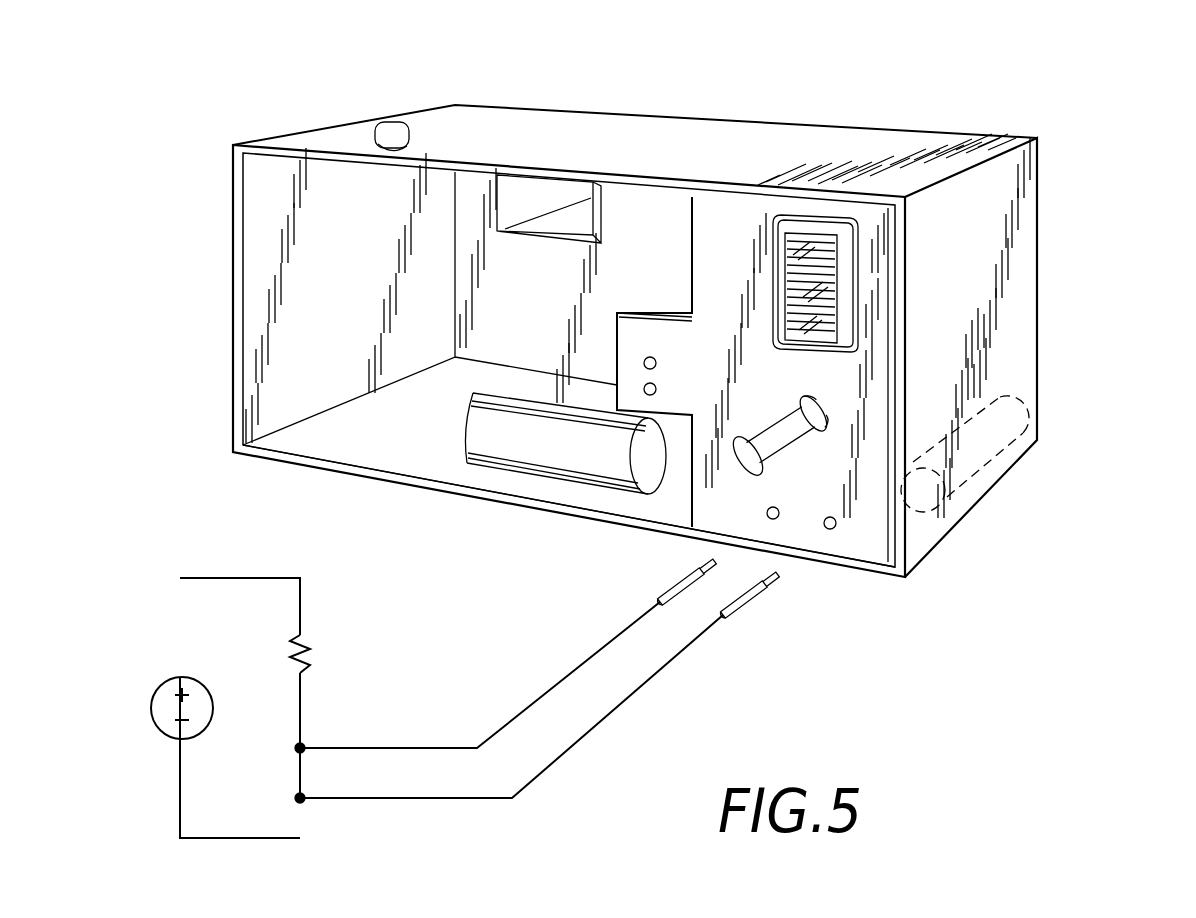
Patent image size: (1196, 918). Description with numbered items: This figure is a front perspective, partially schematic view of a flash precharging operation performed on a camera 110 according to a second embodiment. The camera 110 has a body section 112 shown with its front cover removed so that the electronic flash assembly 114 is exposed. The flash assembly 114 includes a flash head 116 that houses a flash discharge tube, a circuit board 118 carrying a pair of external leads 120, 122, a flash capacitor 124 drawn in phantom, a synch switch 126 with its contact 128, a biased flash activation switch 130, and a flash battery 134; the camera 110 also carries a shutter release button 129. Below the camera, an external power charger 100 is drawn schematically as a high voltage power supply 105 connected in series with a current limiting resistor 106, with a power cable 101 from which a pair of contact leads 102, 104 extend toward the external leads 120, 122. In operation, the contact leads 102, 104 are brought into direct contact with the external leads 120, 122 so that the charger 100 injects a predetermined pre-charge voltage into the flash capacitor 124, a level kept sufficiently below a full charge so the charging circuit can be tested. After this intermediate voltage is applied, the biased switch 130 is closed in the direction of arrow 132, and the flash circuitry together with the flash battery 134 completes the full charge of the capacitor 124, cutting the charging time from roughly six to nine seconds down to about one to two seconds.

The external power charger 100 is at (182, 570).
The power cable 101 is at (477, 800).
The contact lead 102 is at (742, 605).
The contact lead 104 is at (673, 587).
The high voltage power supply 105 is at (152, 706).
The current limiting resistor 106 is at (312, 650).
The camera 110 is at (1054, 101).
The body section 112 is at (698, 132).
The electronic flash assembly 114 is at (1013, 393).
The flash head 116 is at (800, 248).
The circuit board 118 is at (903, 563).
The external lead 120 is at (780, 523).
The external lead 122 is at (832, 530).
The flash capacitor 124 is at (895, 513).
The synch switch 126 is at (655, 360).
The contact 128 is at (644, 389).
The shutter release button 129 is at (392, 130).
The biased flash activation switch 130 is at (825, 433).
The arrow 132 is at (797, 458).
The flash battery 134 is at (515, 427).